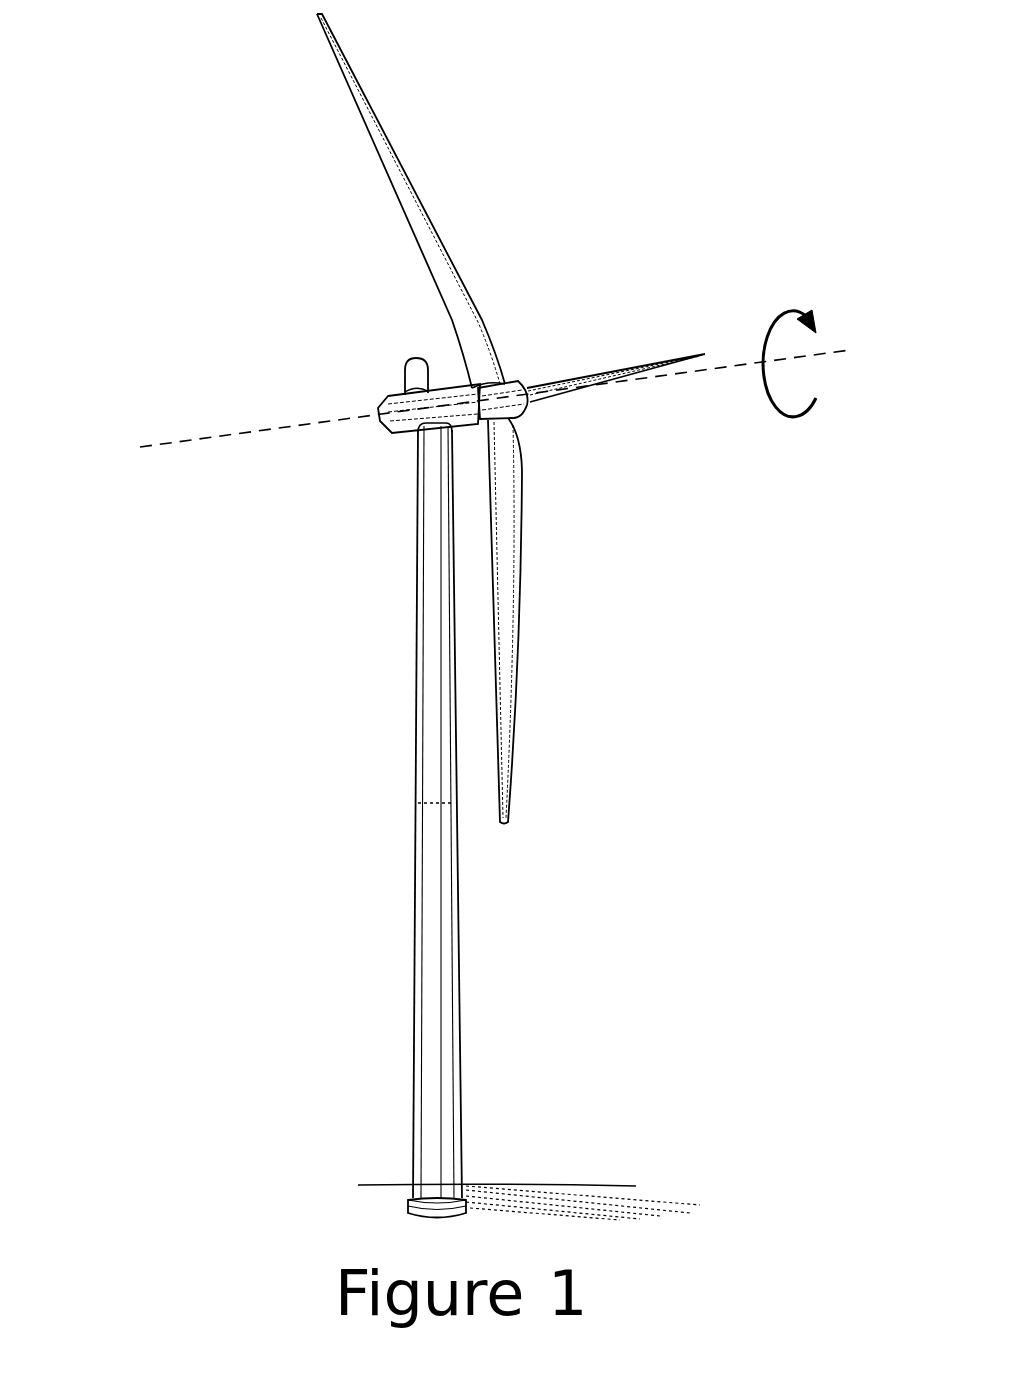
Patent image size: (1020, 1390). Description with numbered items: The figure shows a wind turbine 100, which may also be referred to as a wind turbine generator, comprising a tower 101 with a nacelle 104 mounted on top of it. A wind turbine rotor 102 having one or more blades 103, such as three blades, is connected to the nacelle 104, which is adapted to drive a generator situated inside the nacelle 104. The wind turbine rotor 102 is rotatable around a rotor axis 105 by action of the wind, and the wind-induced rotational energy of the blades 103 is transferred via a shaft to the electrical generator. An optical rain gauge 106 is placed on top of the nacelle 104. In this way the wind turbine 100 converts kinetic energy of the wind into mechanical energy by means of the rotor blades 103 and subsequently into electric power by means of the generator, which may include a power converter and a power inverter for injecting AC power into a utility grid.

The wind turbine 100 is at (724, 965).
The tower 101 is at (432, 980).
The wind turbine rotor 102 is at (560, 292).
The blades 103 is at (508, 642).
The nacelle 104 is at (400, 402).
The rotor axis 105 is at (250, 433).
The optical rain gauge 106 is at (417, 372).